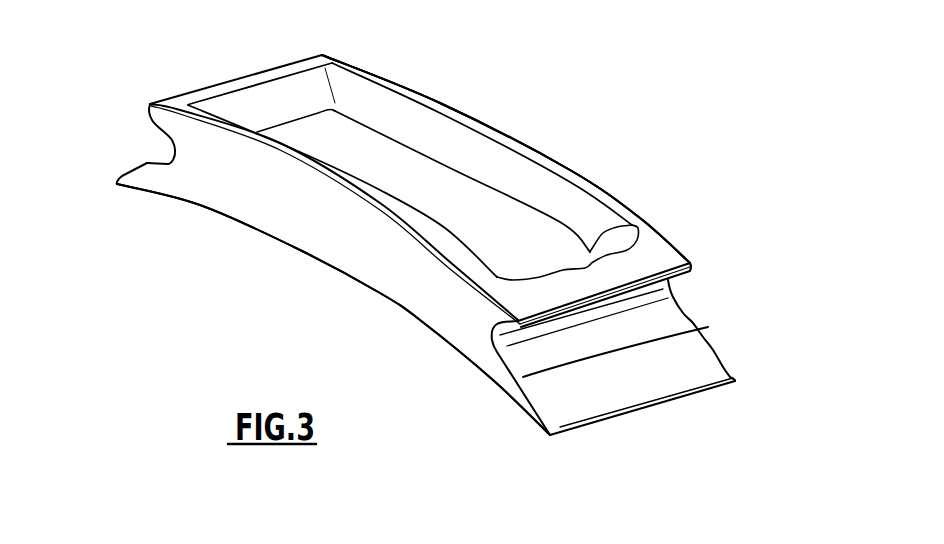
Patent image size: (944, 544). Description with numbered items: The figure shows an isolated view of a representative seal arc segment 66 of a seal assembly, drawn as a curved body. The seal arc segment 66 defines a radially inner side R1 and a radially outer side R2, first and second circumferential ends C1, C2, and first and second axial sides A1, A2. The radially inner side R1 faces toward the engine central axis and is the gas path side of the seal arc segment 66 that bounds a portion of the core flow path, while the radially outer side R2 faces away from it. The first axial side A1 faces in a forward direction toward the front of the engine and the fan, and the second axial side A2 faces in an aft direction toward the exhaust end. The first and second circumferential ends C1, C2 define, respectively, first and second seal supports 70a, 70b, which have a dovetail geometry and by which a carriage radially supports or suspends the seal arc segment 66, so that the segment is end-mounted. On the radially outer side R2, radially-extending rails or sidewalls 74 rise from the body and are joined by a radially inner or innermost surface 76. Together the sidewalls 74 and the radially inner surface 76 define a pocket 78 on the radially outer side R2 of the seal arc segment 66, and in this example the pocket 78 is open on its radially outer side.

The seal arc segment 66 is at (227, 237).
The first seal support 70a is at (522, 345).
The second seal support 70b is at (173, 147).
The sidewalls 74 is at (237, 102).
The radially inner surface 76 is at (363, 130).
The pocket 78 is at (433, 170).
The first axial side A1 is at (318, 240).
The second axial side A2 is at (523, 140).
The radially inner side R1 is at (448, 341).
The radially outer side R2 is at (618, 194).
The first circumferential end C1 is at (713, 333).
The second circumferential end C2 is at (115, 147).